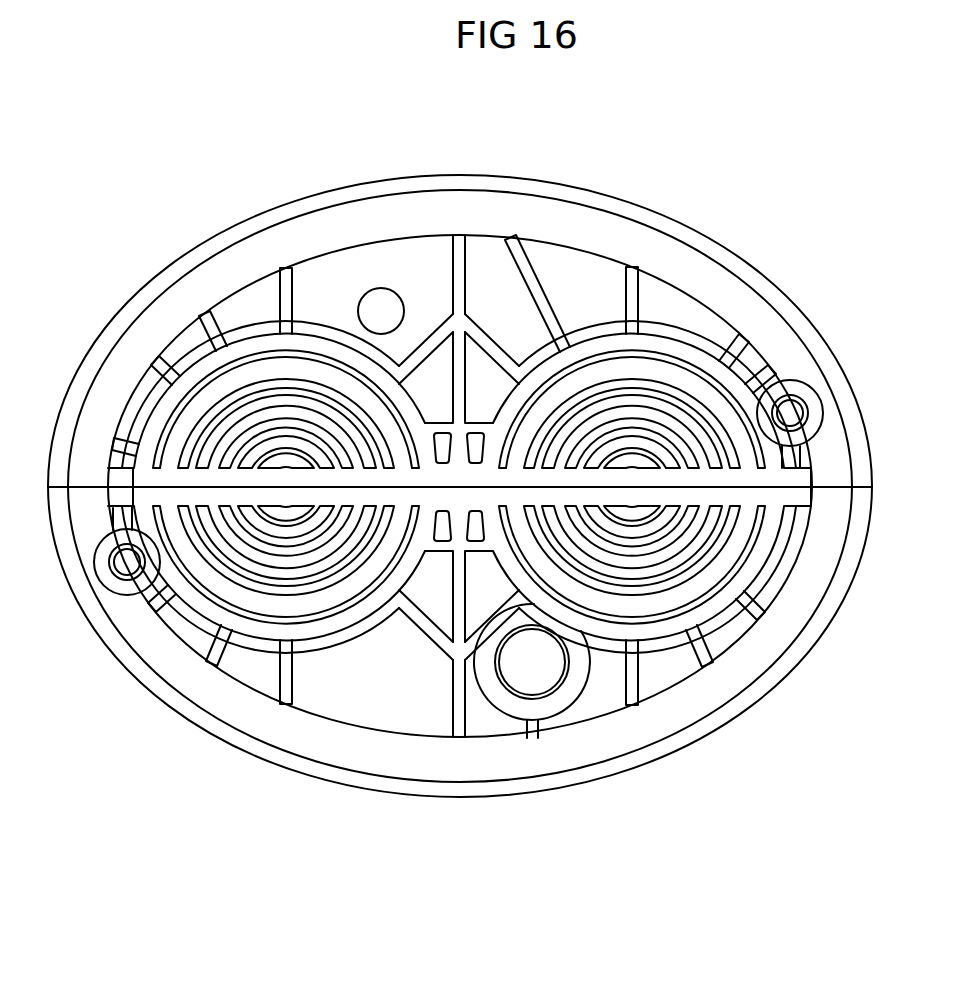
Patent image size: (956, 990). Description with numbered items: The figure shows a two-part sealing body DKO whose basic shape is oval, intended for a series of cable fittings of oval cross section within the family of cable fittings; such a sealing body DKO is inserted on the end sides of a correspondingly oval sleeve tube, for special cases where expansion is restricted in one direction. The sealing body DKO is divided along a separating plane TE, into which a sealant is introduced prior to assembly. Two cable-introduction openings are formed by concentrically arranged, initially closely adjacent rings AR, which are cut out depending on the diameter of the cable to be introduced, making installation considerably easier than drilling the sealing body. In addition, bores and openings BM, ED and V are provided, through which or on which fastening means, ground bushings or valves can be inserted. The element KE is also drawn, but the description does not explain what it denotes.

The sealing body DKO is at (386, 170).
The cooling channel KE is at (203, 373).
The opening ED is at (383, 305).
The rings AR is at (643, 438).
The separating plane TE is at (830, 488).
The bore BM is at (125, 566).
The opening V is at (520, 677).